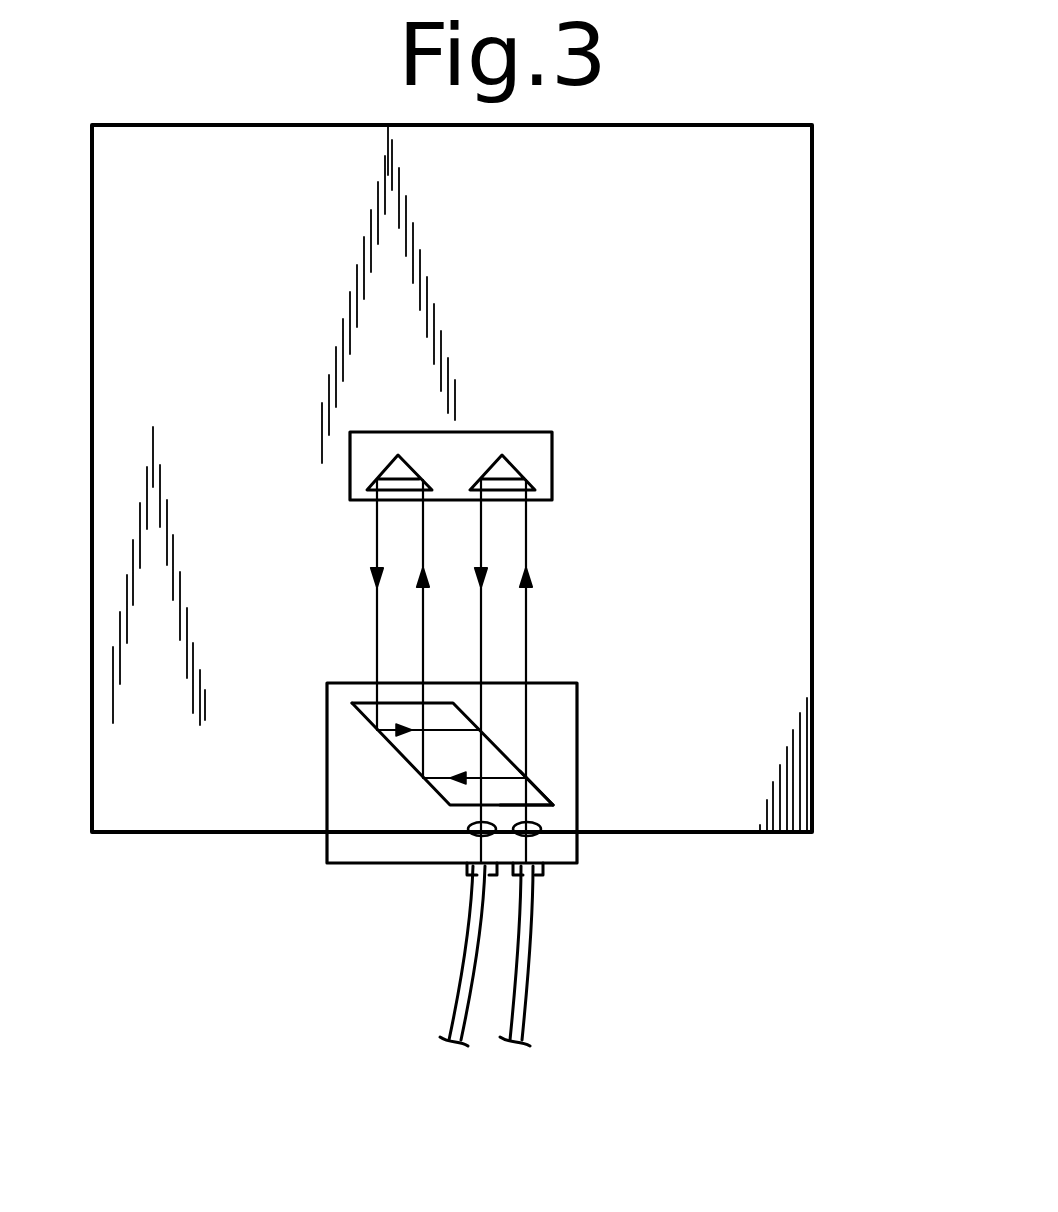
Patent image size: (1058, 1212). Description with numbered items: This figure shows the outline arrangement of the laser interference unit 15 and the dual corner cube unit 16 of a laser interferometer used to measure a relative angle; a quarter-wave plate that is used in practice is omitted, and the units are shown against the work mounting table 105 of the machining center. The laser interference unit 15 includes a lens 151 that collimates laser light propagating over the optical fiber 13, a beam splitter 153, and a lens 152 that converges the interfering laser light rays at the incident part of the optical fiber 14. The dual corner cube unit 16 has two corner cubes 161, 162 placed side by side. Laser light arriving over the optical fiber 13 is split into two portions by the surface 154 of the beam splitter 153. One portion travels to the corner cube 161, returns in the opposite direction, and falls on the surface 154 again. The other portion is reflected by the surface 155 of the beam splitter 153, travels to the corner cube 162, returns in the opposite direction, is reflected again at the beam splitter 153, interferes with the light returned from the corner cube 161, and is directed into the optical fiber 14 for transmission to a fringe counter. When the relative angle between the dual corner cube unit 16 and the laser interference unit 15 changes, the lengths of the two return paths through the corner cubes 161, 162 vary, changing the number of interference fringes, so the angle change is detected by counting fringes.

The work mounting table 105 is at (812, 303).
The dual corner cube unit 16 is at (511, 432).
The corner cube 161 is at (512, 464).
The corner cube 162 is at (389, 466).
The laser interference unit 15 is at (580, 742).
The lens 151 is at (541, 832).
The lens 152 is at (466, 826).
The beam splitter 153 is at (556, 797).
The surface of the beam splitter 154 is at (498, 752).
The surface of the beam splitter 155 is at (403, 757).
The optical fiber 13 is at (526, 988).
The optical fiber 14 is at (463, 978).